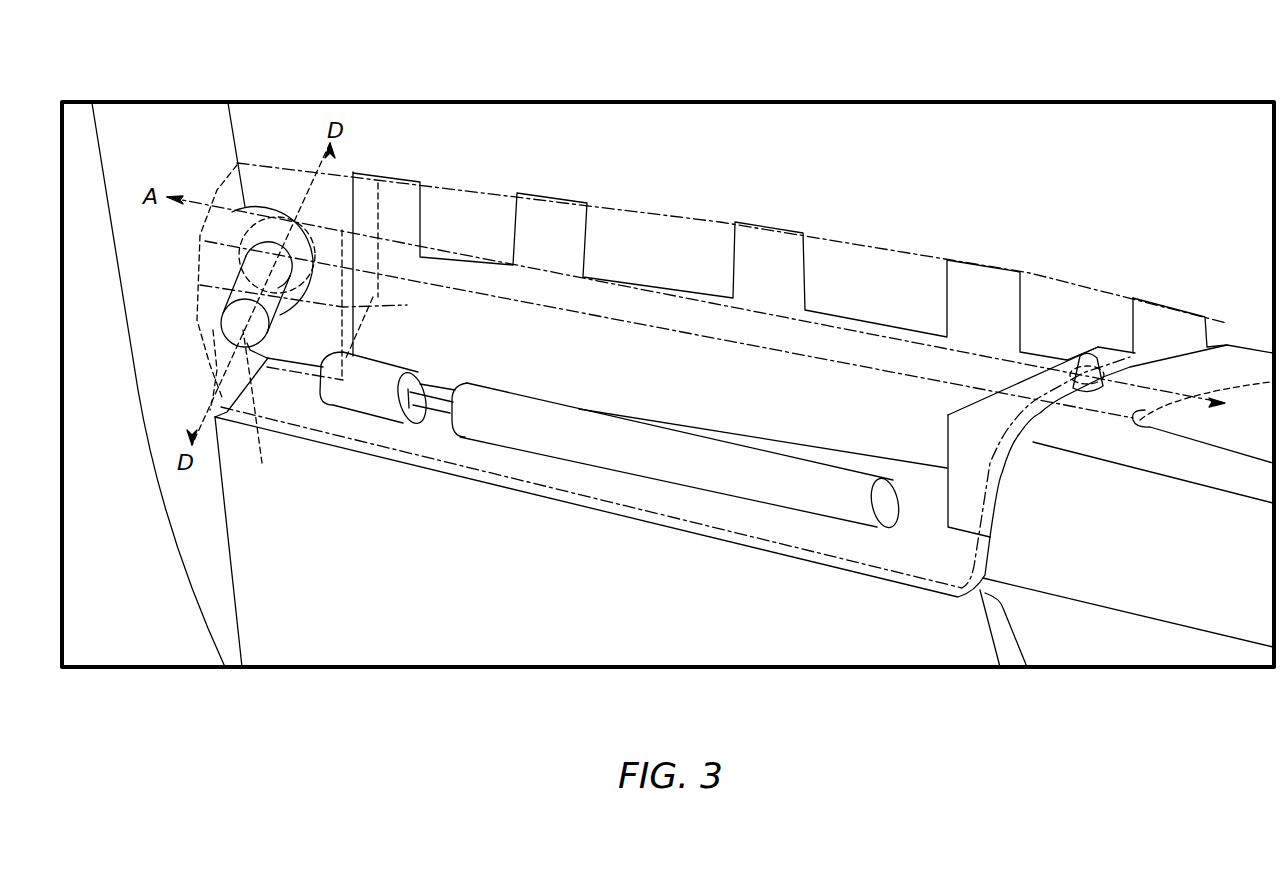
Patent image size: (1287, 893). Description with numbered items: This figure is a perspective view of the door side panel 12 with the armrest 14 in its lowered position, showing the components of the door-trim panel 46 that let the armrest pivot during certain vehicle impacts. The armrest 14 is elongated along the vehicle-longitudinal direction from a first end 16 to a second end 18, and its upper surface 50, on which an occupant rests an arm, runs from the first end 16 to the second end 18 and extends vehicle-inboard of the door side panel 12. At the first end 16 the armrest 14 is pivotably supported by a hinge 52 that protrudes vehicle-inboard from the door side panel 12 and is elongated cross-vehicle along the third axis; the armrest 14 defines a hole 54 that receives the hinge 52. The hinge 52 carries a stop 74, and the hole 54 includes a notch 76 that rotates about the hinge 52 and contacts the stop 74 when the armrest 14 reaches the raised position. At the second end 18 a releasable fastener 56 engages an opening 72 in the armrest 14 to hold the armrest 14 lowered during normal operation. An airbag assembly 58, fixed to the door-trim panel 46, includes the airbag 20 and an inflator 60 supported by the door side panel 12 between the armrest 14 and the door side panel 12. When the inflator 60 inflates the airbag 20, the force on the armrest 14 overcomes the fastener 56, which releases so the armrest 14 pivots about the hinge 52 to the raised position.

The door side panel 12 is at (1043, 187).
The armrest 14 is at (682, 210).
The first end 16 is at (217, 190).
The second end 18 is at (1228, 325).
The airbag 20 is at (657, 457).
The door-trim panel 46 is at (223, 145).
The upper surface 50 is at (760, 290).
The hinge 52 is at (264, 262).
The hole 54 is at (223, 350).
The fastener 56 is at (1077, 360).
The airbag assembly 58 is at (487, 447).
The inflator 60 is at (360, 393).
The opening 72 is at (1088, 363).
The stop 74 is at (233, 300).
The notch 76 is at (260, 411).